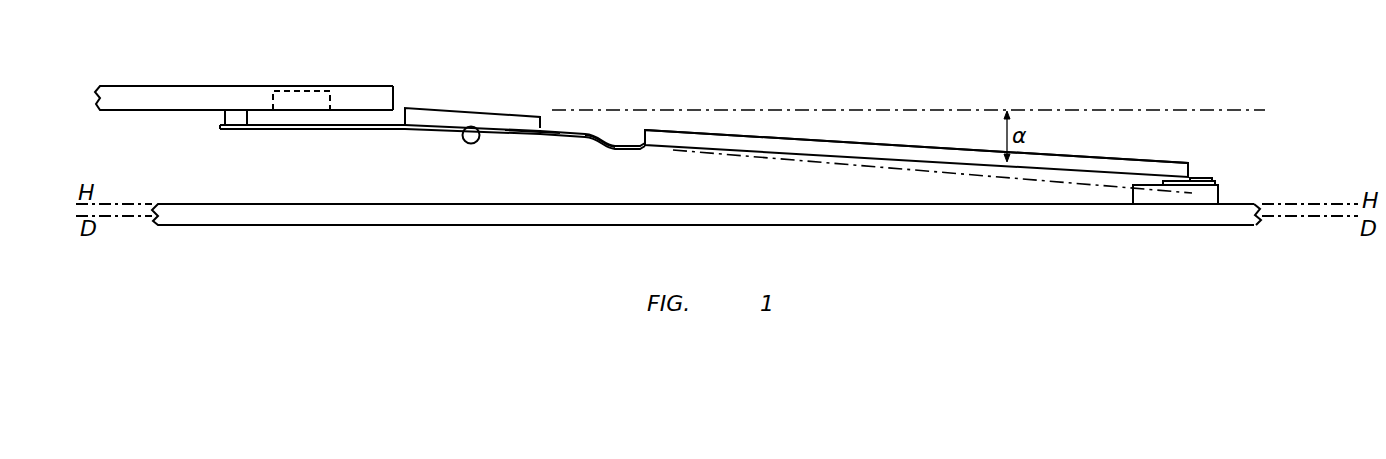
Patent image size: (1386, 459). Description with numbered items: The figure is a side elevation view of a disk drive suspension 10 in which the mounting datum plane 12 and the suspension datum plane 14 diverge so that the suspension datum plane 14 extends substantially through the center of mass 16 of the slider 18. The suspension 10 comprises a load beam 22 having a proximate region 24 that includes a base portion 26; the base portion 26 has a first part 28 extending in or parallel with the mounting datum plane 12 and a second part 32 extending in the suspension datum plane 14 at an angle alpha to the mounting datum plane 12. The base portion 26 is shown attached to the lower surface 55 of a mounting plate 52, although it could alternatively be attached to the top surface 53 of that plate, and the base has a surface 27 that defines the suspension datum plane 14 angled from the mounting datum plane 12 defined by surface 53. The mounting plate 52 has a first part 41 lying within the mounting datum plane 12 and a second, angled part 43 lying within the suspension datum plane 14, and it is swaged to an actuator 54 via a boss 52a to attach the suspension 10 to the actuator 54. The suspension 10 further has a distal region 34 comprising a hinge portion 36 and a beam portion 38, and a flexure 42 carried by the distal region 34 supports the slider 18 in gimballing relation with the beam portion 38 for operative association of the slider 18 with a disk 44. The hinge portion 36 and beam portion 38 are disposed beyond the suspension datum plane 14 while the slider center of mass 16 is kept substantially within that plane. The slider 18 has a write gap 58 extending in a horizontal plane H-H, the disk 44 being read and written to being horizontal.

The disk drive suspension 10 is at (432, 160).
The mounting datum plane 12 is at (1092, 110).
The suspension datum plane 14 is at (1288, 206).
The center of mass 16 is at (1163, 200).
The slider 18 is at (1218, 186).
The load beam 22 is at (830, 140).
The proximate region 24 is at (432, 108).
The base portion 26 is at (320, 130).
The surface 27 is at (505, 130).
The first part 28 is at (245, 125).
The second part 32 is at (518, 136).
The distal region 34 is at (727, 133).
The hinge portion 36 is at (590, 132).
The beam portion 38 is at (828, 160).
The first part 41 is at (357, 107).
The flexure 42 is at (1200, 178).
The second, angled part 43 is at (520, 115).
The disk 44 is at (460, 217).
The mounting plate 52 is at (443, 107).
The boss 52a is at (307, 86).
The top surface 53 is at (394, 86).
The actuator 54 is at (123, 98).
The lower surface 55 is at (494, 101).
The write gap 58 is at (1218, 195).